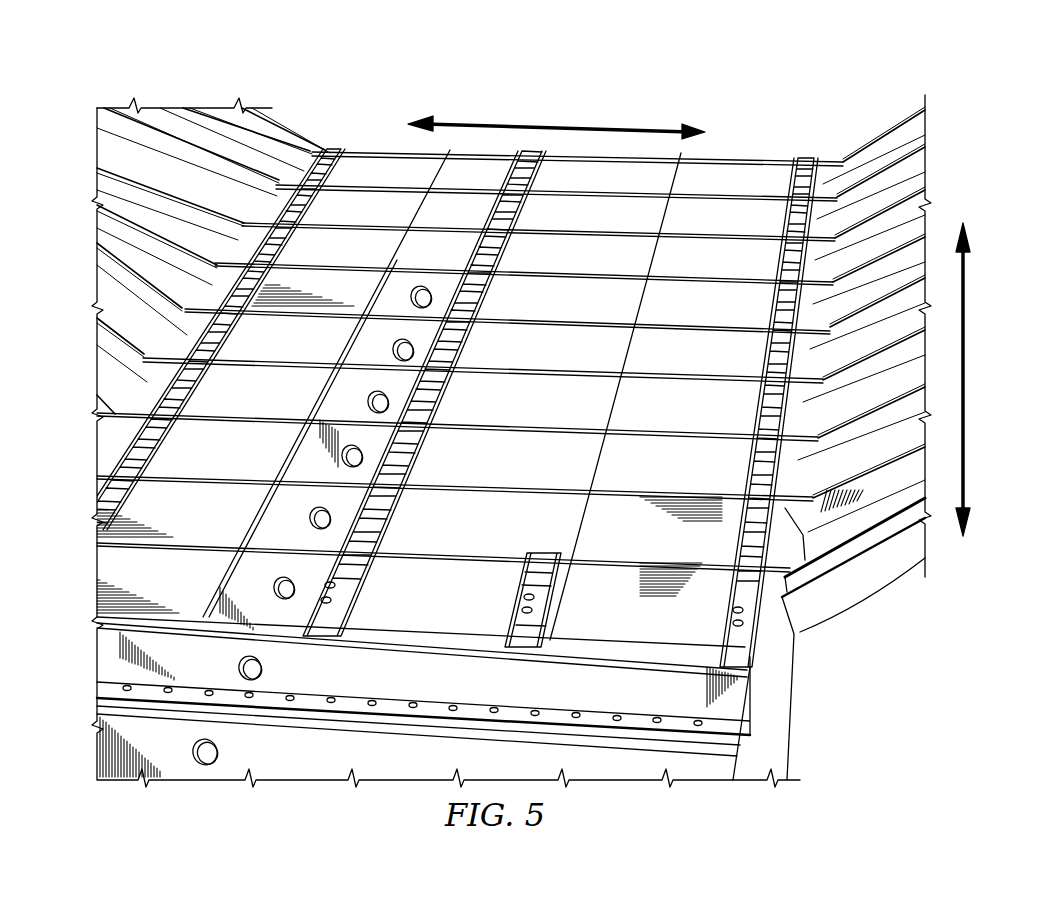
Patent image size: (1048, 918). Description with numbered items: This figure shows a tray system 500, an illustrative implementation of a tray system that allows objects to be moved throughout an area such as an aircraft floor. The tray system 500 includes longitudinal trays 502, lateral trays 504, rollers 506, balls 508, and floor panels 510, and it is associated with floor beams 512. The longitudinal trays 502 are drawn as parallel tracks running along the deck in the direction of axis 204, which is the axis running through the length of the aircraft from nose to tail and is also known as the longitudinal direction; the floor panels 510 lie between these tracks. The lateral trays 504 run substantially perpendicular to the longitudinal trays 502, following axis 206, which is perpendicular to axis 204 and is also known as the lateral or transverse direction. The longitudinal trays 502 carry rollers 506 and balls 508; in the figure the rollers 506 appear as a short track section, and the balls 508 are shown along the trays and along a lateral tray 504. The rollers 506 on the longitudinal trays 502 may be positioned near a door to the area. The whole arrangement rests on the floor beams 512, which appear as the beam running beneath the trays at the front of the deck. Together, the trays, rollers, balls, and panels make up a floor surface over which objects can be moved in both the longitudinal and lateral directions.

The tray system 500 is at (749, 118).
The longitudinal trays 502 is at (238, 320).
The lateral trays 504 is at (432, 705).
The rollers 506 is at (545, 560).
The balls 508 is at (522, 607).
The floor panels 510 is at (383, 246).
The floor beams 512 is at (376, 660).
The axis 206 is at (565, 127).
The axis 204 is at (963, 358).